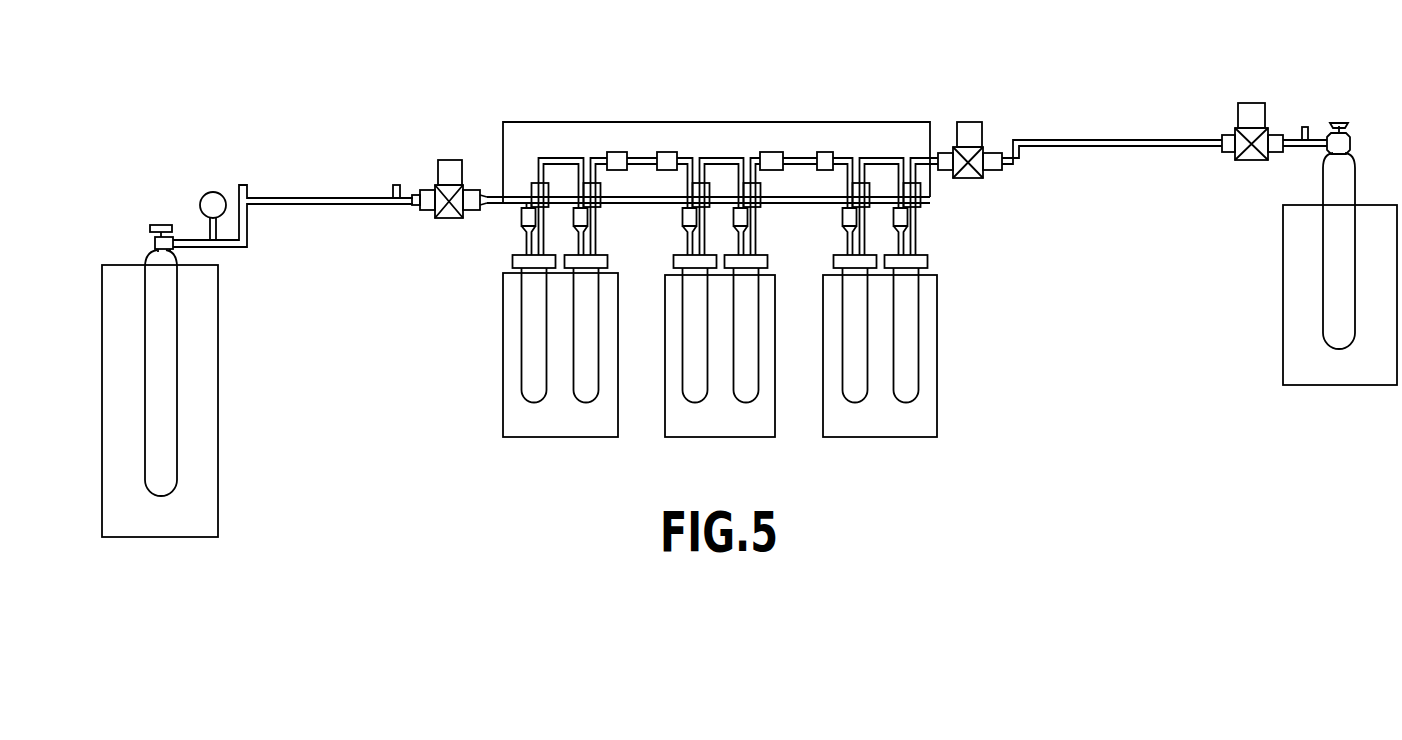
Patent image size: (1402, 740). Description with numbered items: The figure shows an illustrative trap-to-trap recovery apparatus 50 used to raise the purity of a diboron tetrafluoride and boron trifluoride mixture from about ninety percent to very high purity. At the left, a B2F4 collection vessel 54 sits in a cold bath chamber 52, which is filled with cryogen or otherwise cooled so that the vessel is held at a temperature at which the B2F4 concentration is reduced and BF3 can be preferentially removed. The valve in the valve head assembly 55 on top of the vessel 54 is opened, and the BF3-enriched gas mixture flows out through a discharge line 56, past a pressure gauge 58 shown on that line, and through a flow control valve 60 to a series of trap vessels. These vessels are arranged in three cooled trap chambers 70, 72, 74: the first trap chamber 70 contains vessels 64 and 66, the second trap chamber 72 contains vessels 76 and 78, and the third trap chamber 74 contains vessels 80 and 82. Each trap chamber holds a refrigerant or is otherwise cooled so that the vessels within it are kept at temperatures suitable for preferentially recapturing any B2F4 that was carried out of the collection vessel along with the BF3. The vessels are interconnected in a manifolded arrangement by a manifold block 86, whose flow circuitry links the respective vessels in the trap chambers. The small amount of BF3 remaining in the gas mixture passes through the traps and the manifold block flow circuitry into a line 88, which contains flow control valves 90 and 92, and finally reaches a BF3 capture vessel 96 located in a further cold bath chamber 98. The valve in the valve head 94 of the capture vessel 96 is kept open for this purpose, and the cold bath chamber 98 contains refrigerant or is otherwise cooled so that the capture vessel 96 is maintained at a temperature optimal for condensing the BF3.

The cryogenic sample processing system 50 is at (168, 154).
The cold bath chamber 52 is at (218, 440).
The B2F4 collection vessel 54 is at (170, 298).
The valve head assembly 55 is at (153, 236).
The discharge line 56 is at (250, 238).
The pressure gauge 58 is at (220, 193).
The flow control valve 60 is at (443, 172).
The vessel 64 is at (530, 305).
The vessel 66 is at (600, 288).
The trap chamber 70 is at (506, 402).
The trap chamber 72 is at (667, 402).
The trap chamber 74 is at (825, 402).
The vessel 76 is at (692, 300).
The vessel 78 is at (750, 308).
The vessel 80 is at (852, 308).
The vessel 82 is at (910, 316).
The manifold block 86 is at (690, 122).
The line 88 is at (1088, 148).
The flow control valve 90 is at (975, 130).
The flow control valve 92 is at (1262, 110).
The valve head 94 is at (1347, 142).
The BF3 capture vessel 96 is at (1337, 188).
The cold bath chamber 98 is at (1283, 300).